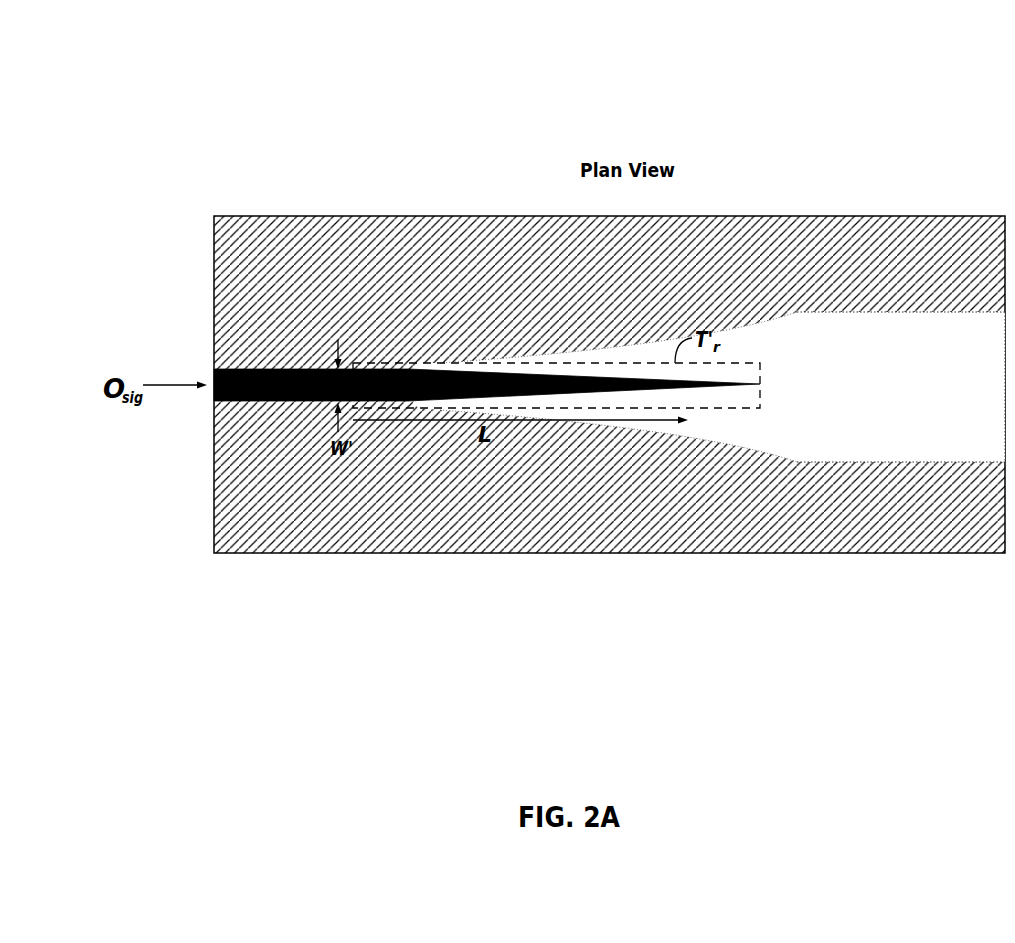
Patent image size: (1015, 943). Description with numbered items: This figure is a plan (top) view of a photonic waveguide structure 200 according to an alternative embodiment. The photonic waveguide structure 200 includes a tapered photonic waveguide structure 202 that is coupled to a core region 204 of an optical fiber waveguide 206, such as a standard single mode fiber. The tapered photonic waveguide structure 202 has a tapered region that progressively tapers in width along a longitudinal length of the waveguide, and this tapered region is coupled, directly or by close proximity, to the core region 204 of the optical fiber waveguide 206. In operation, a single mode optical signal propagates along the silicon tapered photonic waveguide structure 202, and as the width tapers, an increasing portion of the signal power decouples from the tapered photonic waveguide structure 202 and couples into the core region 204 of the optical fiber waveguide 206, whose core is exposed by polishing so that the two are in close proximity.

The photonic waveguide structure 200 is at (97, 80).
The tapered photonic waveguide structure 202 is at (265, 369).
The core region 204 is at (890, 391).
The optical fiber waveguide 206 is at (429, 207).